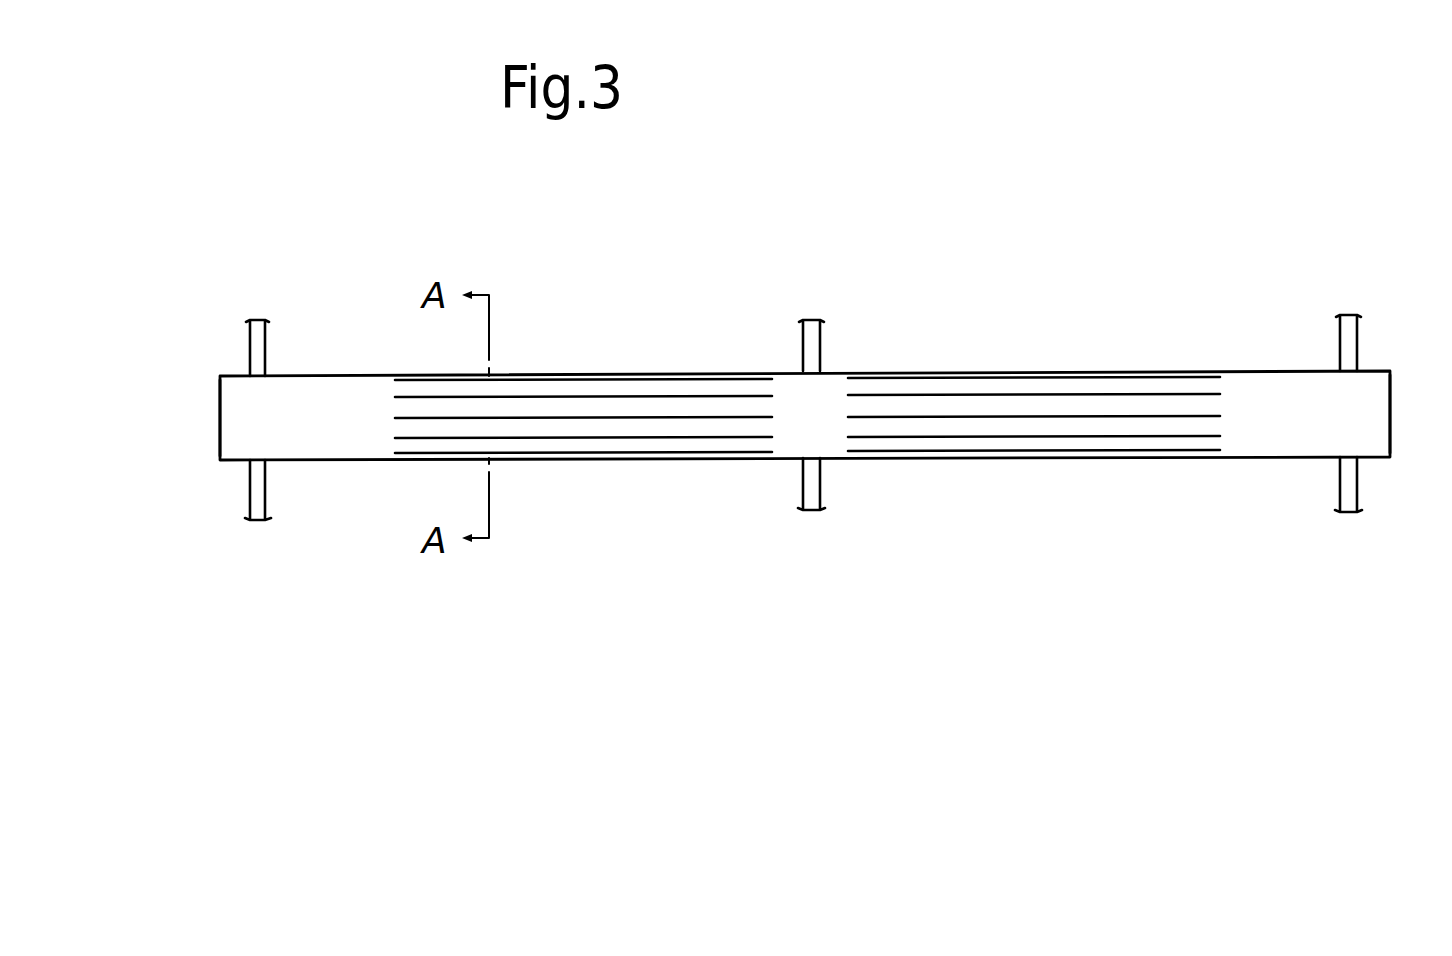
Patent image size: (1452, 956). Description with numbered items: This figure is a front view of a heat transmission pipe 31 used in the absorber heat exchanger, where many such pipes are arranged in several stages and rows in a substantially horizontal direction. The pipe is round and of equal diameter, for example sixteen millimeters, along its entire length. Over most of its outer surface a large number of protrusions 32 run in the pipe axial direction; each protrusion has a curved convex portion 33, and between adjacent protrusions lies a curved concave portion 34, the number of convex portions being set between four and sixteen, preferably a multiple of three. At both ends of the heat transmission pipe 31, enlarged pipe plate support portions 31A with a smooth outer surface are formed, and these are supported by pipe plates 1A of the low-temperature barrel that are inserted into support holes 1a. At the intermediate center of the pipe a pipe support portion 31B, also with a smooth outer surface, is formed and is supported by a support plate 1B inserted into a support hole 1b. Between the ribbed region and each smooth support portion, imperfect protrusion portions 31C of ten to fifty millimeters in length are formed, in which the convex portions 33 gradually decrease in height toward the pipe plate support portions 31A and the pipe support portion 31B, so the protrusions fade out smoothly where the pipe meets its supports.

The pipe plate 1A is at (250, 348).
The support hole 1a is at (248, 463).
The support plate 1B is at (820, 345).
The support hole 1b is at (802, 457).
The heat transmission pipe 31 is at (535, 372).
The pipe plate support portion 31A is at (331, 376).
The pipe support portion 31B is at (845, 372).
The imperfect protrusion portion 31C is at (405, 447).
The protrusion 32 is at (590, 418).
The convex portion 33 is at (727, 387).
The concave portion 34 is at (753, 405).